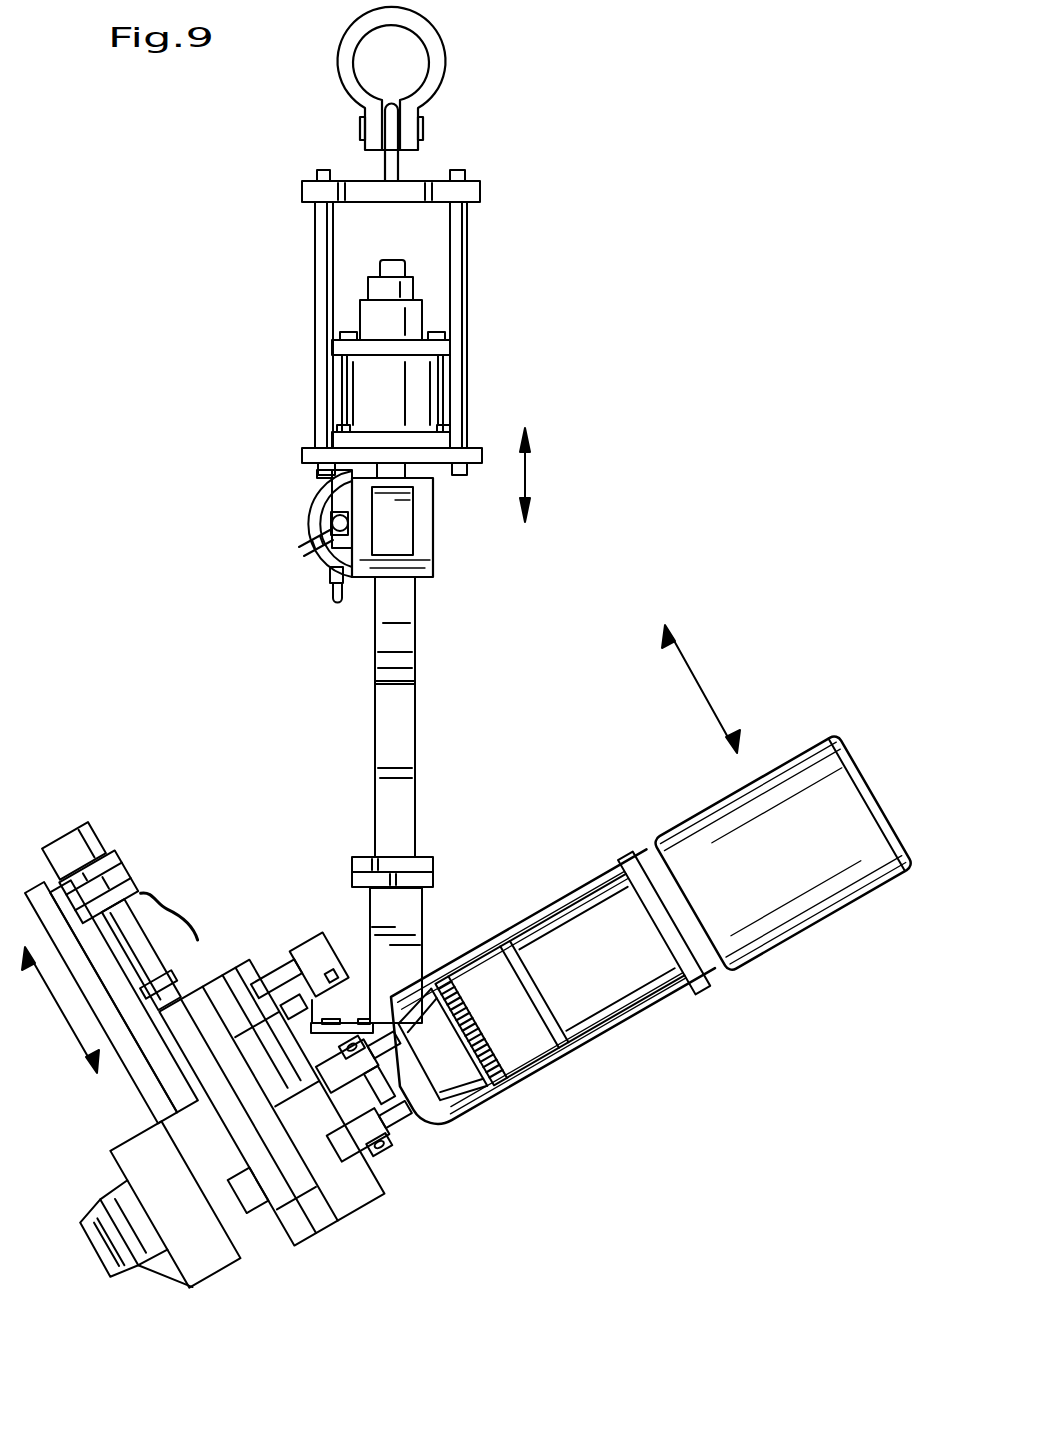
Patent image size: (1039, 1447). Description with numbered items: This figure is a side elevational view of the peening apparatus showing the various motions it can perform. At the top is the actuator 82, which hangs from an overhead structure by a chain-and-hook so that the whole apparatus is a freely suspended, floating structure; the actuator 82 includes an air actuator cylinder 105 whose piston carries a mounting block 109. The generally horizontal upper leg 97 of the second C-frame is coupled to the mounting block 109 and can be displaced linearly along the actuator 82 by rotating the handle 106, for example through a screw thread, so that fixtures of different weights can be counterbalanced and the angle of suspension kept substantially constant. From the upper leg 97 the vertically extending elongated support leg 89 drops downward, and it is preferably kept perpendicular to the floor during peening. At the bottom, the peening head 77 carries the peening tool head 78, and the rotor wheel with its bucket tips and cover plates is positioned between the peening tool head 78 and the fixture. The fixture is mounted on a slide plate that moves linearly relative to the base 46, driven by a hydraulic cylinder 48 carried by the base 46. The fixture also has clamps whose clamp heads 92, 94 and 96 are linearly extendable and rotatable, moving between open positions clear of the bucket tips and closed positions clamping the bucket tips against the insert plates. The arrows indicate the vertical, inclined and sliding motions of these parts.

The actuator 82 is at (212, 188).
The actuator cylinder 105 is at (385, 395).
The handle 106 is at (284, 546).
The upper leg 97 is at (405, 525).
The mounting block 109 is at (423, 545).
The elongated support leg 89 is at (415, 722).
The clamp head 94 is at (348, 1030).
The clamp head 92 is at (322, 947).
The base 46 is at (32, 893).
The hydraulic cylinder 48 is at (70, 846).
The peening head 77 is at (625, 945).
The peening tool head 78 is at (380, 1080).
The clamp head 96 is at (365, 1147).